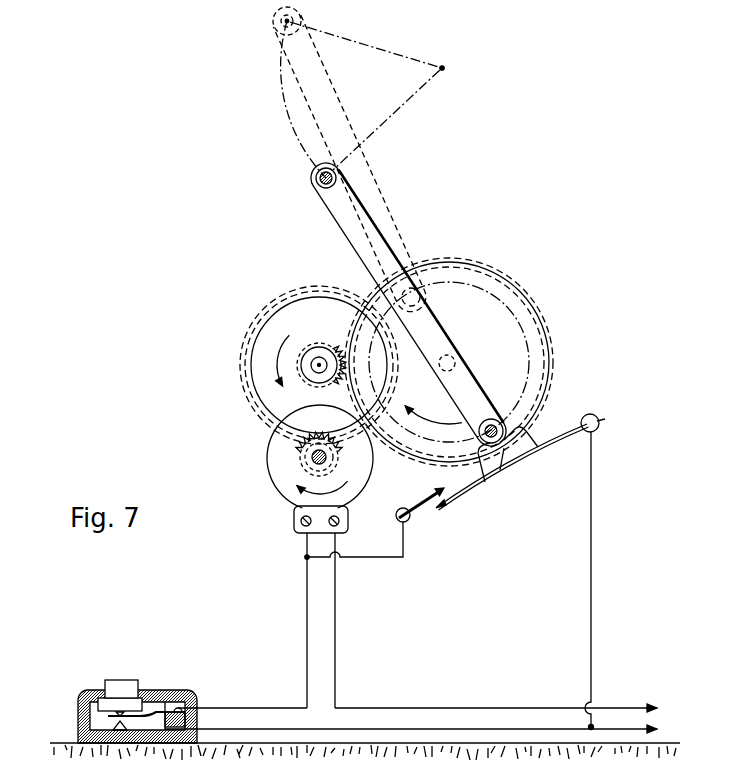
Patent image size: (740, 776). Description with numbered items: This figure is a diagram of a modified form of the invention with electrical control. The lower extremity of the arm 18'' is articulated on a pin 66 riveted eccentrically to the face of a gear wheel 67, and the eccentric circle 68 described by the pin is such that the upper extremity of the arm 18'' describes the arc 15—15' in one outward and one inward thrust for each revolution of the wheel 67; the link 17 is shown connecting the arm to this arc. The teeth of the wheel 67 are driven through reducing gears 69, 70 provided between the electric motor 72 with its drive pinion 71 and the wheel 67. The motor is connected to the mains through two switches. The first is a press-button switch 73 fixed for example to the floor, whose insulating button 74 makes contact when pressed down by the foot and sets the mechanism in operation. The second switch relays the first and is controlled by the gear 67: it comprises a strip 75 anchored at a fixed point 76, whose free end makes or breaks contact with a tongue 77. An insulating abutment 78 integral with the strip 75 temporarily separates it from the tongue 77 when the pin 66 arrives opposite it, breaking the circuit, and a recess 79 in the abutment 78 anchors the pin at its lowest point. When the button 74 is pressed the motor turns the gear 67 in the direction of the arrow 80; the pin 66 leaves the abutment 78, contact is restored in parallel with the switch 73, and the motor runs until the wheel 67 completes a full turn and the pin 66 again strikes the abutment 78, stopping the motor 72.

The upper end point of arc 15' is at (262, 21).
The link 17 is at (442, 68).
The lower end point of arc 15 is at (304, 178).
The arm 18'' is at (393, 304).
The pinion 69 is at (313, 343).
The gear wheel 70 is at (252, 320).
The eccentric circle 68 is at (501, 302).
The gear wheel 67 is at (547, 318).
The pin 66 is at (503, 428).
The arrow 80 is at (433, 410).
The abutment 78 is at (517, 451).
The recess 79 is at (501, 470).
The strip 75 is at (470, 494).
The fixed point 76 is at (598, 421).
The tongue 77 is at (420, 502).
The drive pinion 71 is at (306, 455).
The electric motor 72 is at (278, 474).
The button 74 is at (128, 680).
The press-button switch 73 is at (160, 690).